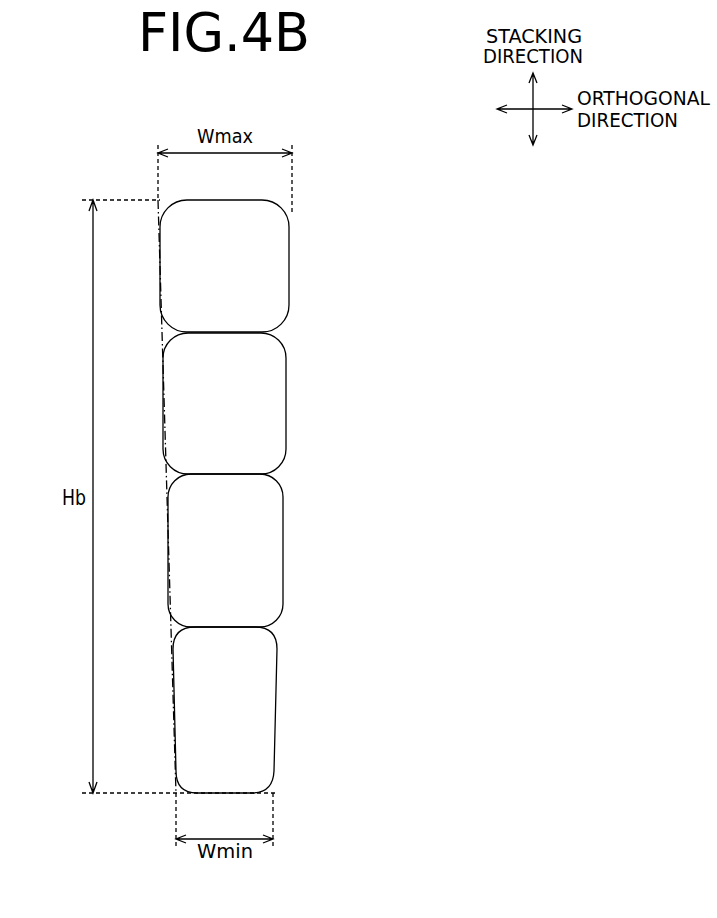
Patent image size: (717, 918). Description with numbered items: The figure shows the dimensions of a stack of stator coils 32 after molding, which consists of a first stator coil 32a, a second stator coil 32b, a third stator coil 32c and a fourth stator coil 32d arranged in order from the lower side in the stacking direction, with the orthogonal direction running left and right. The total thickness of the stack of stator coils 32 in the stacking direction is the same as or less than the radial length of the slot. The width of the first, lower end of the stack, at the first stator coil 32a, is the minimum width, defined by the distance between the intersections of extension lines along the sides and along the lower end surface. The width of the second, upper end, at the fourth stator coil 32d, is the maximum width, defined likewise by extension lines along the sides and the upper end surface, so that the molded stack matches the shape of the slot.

The stator coil 32 is at (283, 496).
The first stator coil 32a is at (263, 718).
The second stator coil 32b is at (268, 556).
The third stator coil 32c is at (272, 407).
The fourth stator coil 32d is at (273, 278).